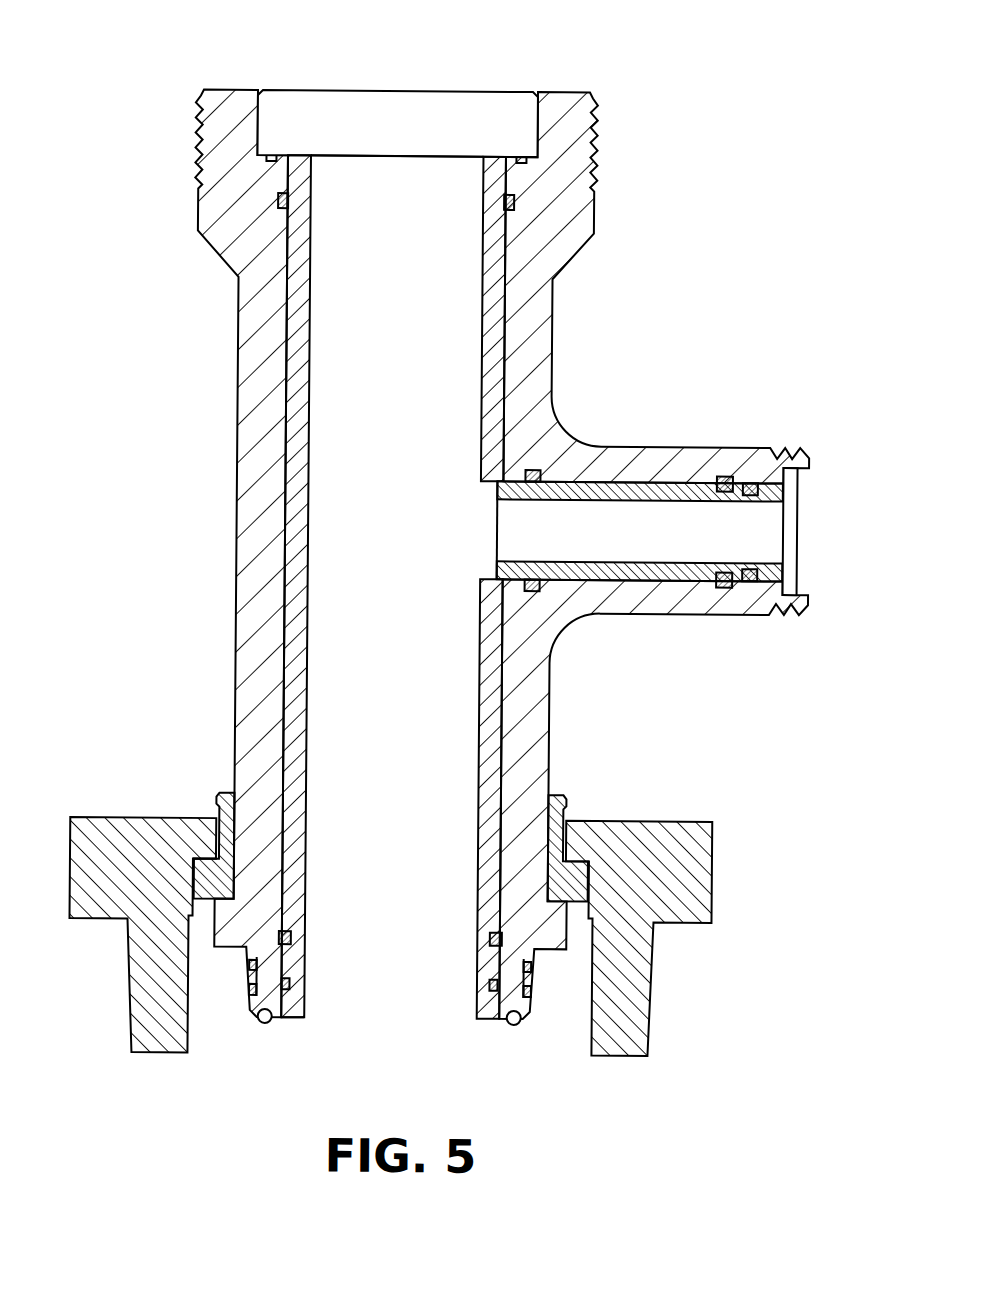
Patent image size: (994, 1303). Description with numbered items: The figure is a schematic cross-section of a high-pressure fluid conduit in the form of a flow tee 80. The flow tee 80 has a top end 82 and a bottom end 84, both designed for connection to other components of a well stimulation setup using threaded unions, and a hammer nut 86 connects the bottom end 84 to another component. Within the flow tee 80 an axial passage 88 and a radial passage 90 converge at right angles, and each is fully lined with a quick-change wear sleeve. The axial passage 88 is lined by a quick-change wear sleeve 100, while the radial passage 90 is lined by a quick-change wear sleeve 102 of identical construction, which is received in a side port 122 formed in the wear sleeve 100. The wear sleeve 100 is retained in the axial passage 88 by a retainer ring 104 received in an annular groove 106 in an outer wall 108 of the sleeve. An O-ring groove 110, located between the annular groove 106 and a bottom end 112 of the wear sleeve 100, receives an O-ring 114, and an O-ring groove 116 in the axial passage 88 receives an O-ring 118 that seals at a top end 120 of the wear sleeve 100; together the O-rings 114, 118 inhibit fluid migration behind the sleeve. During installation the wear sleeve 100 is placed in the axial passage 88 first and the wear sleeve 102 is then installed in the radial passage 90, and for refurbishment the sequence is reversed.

The flow tee 80 is at (629, 400).
The top end 82 is at (565, 91).
The bottom end 84 is at (535, 1014).
The hammer nut 86 is at (717, 890).
The axial passage 88 is at (503, 337).
The radial passage 90 is at (668, 480).
The quick-change wear sleeve 100 is at (393, 622).
The quick-change wear sleeve 102 is at (638, 538).
The retainer ring 104 is at (296, 931).
The annular groove 106 is at (296, 942).
The outer wall 108 is at (288, 712).
The O-ring groove 110 is at (294, 997).
The bottom end 112 is at (325, 1019).
The O-ring 114 is at (296, 983).
The O-ring groove 116 is at (286, 204).
The O-ring 118 is at (286, 200).
The top end 120 is at (414, 157).
The side port 122 is at (494, 543).